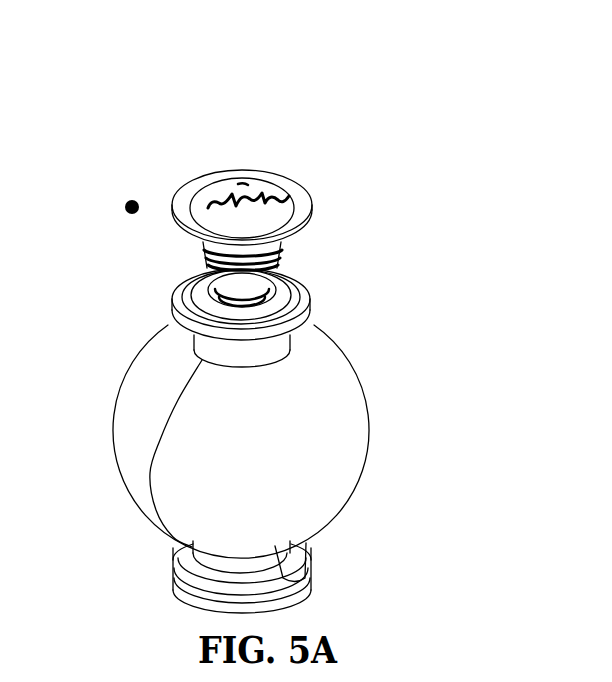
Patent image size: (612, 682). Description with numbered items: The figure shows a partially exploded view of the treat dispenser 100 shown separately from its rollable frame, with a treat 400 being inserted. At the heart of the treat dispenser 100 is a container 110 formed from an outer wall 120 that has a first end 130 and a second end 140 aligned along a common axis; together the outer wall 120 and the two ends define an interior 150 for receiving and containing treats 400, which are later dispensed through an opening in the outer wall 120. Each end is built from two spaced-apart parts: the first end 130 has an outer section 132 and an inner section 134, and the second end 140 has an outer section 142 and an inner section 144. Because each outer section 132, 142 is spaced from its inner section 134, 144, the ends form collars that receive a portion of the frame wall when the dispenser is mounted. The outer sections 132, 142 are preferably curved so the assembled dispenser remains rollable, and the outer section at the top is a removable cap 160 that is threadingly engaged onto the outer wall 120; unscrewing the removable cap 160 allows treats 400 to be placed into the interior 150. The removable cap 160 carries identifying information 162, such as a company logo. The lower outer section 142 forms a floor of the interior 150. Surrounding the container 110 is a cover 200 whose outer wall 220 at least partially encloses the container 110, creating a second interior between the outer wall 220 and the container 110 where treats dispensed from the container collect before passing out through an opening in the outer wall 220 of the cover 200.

The treat dispenser 100 is at (160, 100).
The container 110 is at (257, 565).
The outer wall 120 is at (258, 356).
The first end 130 is at (330, 299).
The outer section 132 is at (186, 195).
The inner section 134 is at (187, 296).
The second end 140 is at (348, 567).
The outer section 142 is at (197, 593).
The inner section 144 is at (182, 560).
The interior 150 is at (262, 288).
The removable cap 160 is at (314, 185).
The identifying information 162 is at (248, 192).
The cover 200 is at (347, 448).
The outer wall 220 is at (138, 402).
The treat 400 is at (184, 252).